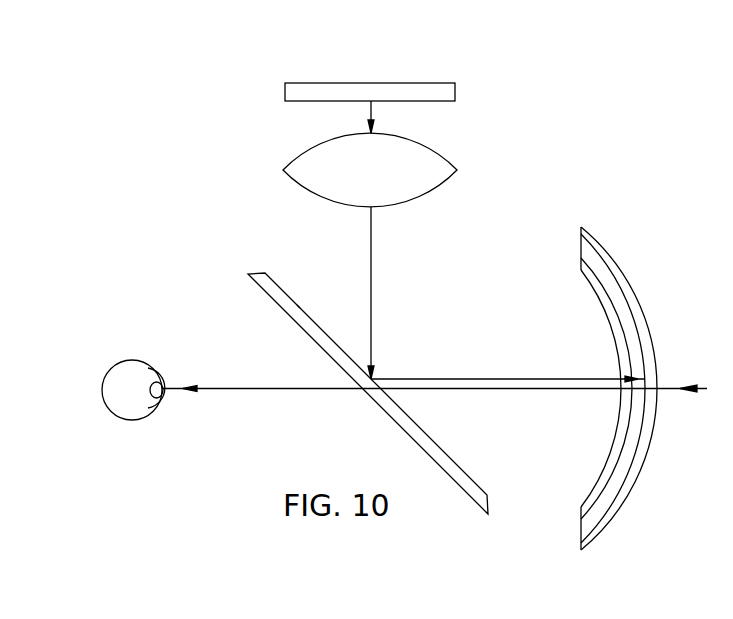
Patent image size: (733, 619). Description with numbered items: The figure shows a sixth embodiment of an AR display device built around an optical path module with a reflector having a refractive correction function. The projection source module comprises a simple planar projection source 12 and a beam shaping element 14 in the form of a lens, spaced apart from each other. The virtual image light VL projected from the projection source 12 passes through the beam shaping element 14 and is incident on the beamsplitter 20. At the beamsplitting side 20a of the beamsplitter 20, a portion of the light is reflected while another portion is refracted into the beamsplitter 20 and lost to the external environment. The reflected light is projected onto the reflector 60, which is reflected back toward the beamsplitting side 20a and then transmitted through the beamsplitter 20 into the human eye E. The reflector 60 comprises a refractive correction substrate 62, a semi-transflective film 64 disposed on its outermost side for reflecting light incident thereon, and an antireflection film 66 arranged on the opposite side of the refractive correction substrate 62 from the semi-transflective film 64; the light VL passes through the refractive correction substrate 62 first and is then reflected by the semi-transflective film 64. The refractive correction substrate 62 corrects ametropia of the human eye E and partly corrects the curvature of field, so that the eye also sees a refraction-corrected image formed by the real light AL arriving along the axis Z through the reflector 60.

The projection source 12 is at (433, 95).
The beam shaping element 14 is at (443, 155).
The beamsplitter 20 is at (258, 272).
The beamsplitting side 20a is at (297, 305).
The reflector 60 is at (618, 345).
The refractive correction substrate 62 is at (608, 267).
The semi-transflective film 64 is at (642, 305).
The antireflection film 66 is at (620, 338).
The human eye E is at (147, 370).
The virtual image light VL is at (385, 240).
The real light AL is at (536, 368).
The Z axis Z is at (443, 389).